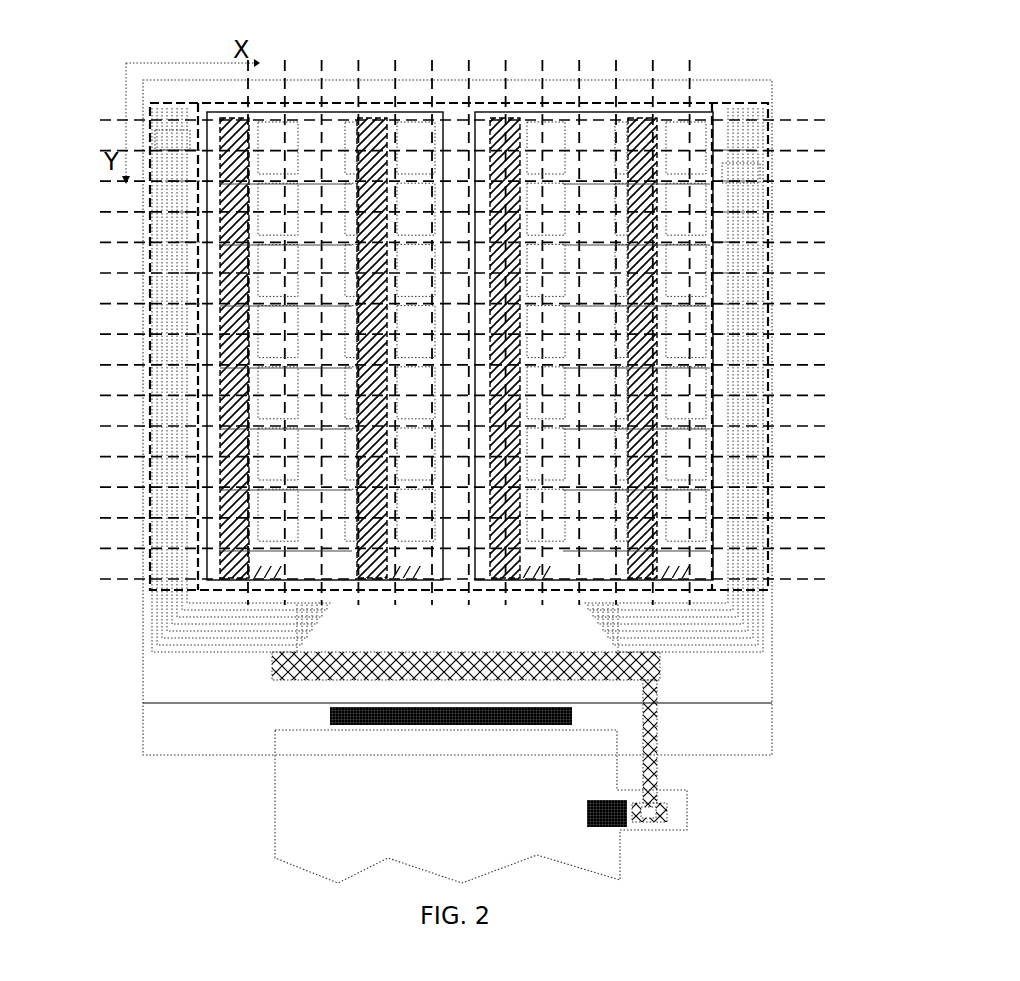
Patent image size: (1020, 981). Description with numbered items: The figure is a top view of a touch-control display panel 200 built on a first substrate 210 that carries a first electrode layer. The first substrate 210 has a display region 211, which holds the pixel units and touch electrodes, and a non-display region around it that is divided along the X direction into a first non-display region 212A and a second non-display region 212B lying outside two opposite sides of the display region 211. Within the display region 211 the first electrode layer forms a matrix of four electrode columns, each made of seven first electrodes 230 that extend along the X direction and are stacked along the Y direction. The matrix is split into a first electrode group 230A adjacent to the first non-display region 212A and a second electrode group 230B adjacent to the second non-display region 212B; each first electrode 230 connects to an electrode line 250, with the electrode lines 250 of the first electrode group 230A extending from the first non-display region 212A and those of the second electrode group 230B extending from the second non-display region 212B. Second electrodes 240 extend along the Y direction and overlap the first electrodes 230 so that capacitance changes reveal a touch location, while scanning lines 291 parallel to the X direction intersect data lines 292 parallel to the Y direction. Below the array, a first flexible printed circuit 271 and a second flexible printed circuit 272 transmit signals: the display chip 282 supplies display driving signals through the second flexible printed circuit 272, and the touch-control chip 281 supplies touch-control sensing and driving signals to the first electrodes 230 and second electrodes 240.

The touch-control display panel 200 is at (167, 45).
The first substrate 210 is at (773, 220).
The display region 211 is at (490, 100).
The first non-display region 212A is at (163, 135).
The second non-display region 212B is at (745, 135).
The first electrode 230 is at (293, 162).
The first electrode group 230A is at (372, 113).
The second electrode group 230B is at (597, 115).
The second electrode 240 is at (653, 130).
The electrode line 250 is at (742, 165).
The first flexible printed circuit 271 is at (657, 688).
The second flexible printed circuit 272 is at (305, 777).
The touch-control chip 281 is at (625, 830).
The display chip 282 is at (330, 713).
The scanning line 291 is at (790, 392).
The data line 292 is at (247, 598).